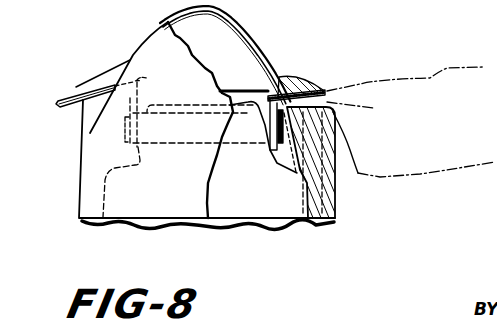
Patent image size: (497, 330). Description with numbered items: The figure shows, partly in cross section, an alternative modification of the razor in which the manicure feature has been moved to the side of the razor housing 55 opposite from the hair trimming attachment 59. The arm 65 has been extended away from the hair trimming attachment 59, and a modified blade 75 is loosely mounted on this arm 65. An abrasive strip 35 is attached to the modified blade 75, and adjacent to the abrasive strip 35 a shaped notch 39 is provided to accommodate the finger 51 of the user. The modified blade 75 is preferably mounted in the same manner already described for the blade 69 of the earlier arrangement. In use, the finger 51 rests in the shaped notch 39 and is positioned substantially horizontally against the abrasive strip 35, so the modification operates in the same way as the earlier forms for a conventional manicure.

The abrasive strip 35 is at (323, 92).
The shaped notch 39 is at (336, 130).
The finger 51 is at (383, 177).
The razor housing 55 is at (79, 172).
The hair trimming attachment 59 is at (62, 99).
The arm 65 is at (234, 140).
The blade 69 is at (141, 88).
The modified blade 75 is at (264, 89).